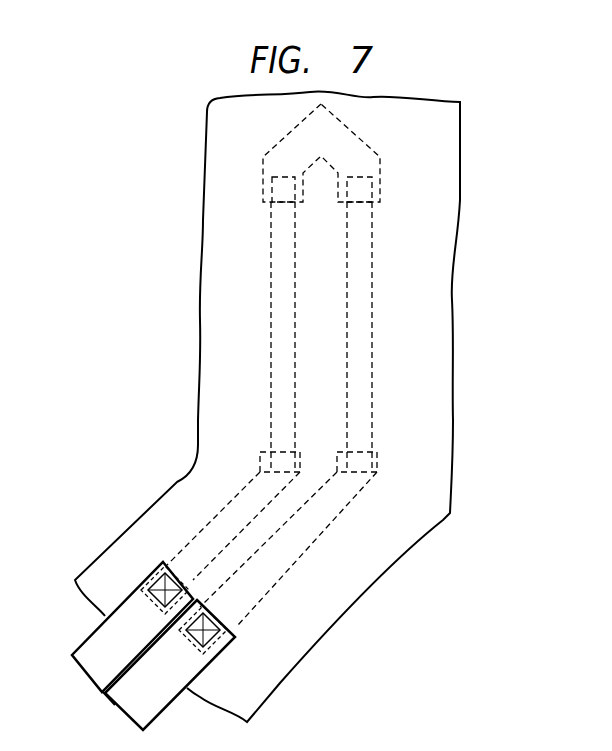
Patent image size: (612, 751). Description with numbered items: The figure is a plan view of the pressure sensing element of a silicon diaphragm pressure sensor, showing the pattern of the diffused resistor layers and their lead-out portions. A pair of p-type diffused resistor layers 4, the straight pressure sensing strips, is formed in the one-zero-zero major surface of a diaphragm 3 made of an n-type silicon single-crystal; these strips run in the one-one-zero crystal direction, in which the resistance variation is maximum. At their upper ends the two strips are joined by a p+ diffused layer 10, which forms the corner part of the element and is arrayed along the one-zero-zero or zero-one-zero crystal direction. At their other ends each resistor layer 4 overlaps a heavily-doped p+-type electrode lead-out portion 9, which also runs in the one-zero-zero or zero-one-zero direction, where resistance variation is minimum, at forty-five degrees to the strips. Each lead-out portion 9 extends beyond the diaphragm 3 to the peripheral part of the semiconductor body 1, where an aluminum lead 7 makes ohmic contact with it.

The semiconductor body 1 is at (290, 652).
The diaphragm 3 is at (448, 207).
The diffused resistor layer 4 is at (273, 298).
The aluminum lead 7 is at (88, 670).
The electrode lead-out portion 9 is at (205, 536).
The p+ diffused layer 10 is at (387, 158).